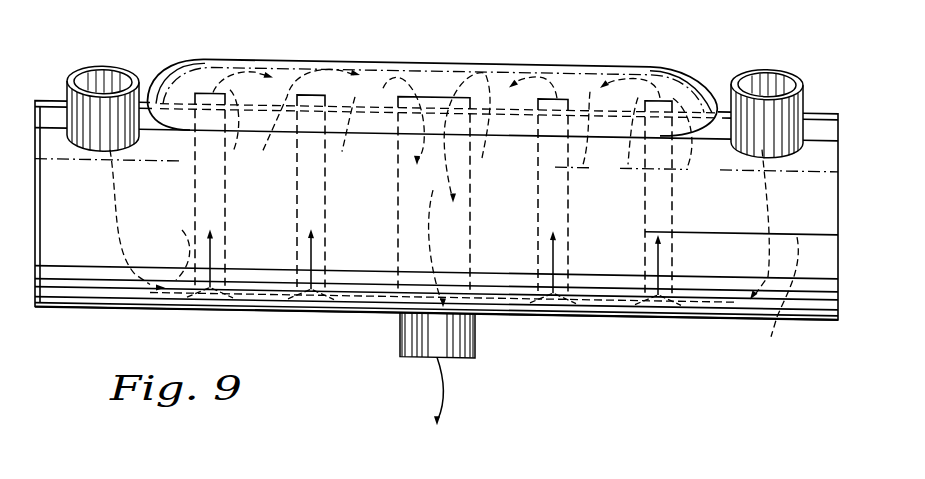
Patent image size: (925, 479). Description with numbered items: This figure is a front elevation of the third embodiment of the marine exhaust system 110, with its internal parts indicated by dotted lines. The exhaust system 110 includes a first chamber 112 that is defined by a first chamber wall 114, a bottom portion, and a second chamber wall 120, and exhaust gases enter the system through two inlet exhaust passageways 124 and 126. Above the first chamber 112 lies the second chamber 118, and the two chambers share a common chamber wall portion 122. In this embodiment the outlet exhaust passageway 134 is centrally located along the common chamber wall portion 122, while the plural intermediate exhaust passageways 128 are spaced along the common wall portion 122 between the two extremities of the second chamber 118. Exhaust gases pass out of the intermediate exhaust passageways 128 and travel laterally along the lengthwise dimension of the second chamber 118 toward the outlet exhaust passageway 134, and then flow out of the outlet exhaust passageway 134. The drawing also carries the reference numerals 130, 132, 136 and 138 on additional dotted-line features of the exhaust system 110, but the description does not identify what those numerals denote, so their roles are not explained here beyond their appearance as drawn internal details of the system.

The marine exhaust system 110 is at (684, 50).
The first chamber 112 is at (787, 296).
The first chamber wall 114 is at (826, 164).
The second chamber 118 is at (598, 48).
The second chamber wall 120 is at (513, 57).
The common chamber wall portion 122 is at (342, 141).
The inlet exhaust passageway 124 is at (808, 19).
The inlet exhaust passageway 126 is at (107, 80).
The intermediate exhaust passageways 128 is at (297, 245).
The side flow path 130 is at (182, 227).
The downward flow path 132 is at (461, 133).
The outlet exhaust passageway 134 is at (577, 223).
The drain outlet 136 is at (474, 328).
The central downward flow path 138 is at (451, 137).